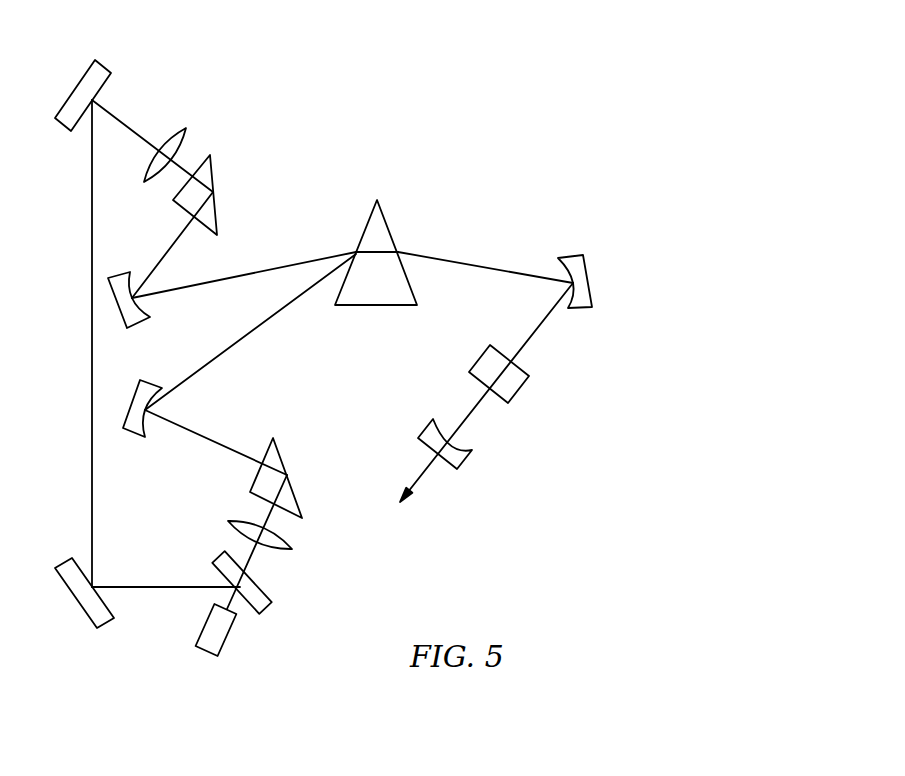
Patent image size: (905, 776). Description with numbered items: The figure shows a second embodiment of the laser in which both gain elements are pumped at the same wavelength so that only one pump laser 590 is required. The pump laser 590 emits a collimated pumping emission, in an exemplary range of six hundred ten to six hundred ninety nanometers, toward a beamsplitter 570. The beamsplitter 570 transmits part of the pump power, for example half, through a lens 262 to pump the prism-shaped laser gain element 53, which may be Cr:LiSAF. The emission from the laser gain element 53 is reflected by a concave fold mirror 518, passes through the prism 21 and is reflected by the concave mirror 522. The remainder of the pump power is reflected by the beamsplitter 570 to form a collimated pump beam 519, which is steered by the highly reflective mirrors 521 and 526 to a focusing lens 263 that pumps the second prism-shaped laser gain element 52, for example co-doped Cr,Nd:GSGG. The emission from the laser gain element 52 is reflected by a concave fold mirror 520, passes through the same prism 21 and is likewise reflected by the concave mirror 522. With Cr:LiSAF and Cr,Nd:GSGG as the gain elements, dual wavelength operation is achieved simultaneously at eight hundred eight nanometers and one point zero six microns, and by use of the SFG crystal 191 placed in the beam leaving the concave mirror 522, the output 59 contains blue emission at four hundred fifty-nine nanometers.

The highly reflective mirror 526 is at (96, 63).
The focusing lens 263 is at (187, 129).
The prism shaped laser gain element 52 is at (213, 168).
The prism 21 is at (386, 221).
The concave mirror 522 is at (592, 276).
The concave fold mirror 520 is at (149, 318).
The concave fold mirror 518 is at (159, 388).
The SFG crystal 191 is at (523, 389).
The output 59 is at (474, 407).
The prism-shaped laser gain element 53 is at (296, 490).
The lens 262 is at (228, 522).
The collimated pump beam 519 is at (147, 586).
The highly reflective mirror 521 is at (63, 563).
The beamsplitter 570 is at (272, 605).
The pump laser 590 is at (225, 642).